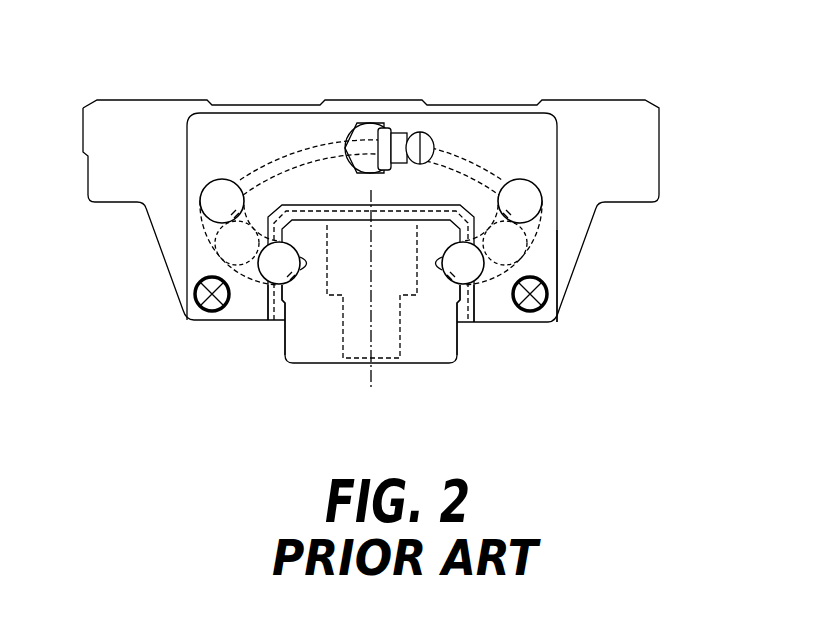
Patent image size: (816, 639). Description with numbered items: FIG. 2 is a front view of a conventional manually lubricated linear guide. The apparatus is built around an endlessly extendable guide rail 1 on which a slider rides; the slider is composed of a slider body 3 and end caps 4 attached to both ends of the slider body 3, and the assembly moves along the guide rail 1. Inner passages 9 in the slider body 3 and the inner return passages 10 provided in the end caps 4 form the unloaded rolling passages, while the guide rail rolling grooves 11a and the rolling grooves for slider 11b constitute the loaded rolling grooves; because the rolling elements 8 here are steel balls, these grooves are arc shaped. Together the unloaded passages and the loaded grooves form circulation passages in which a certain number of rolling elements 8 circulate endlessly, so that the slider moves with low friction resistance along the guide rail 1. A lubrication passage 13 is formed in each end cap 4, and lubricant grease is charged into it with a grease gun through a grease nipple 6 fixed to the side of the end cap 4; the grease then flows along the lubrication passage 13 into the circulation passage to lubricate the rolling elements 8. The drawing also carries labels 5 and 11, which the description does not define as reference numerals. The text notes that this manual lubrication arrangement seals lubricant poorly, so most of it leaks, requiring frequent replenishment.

The guide rail 1 is at (313, 345).
The slider body 3 is at (622, 175).
The end cap 4 is at (557, 243).
The end seal 5 is at (257, 138).
The grease nipple 6 is at (392, 133).
The rolling elements 8 is at (220, 195).
The inner passages 9 is at (207, 180).
The inner return passages 10 is at (217, 257).
The rolling groove 11 is at (266, 318).
The guide rail rolling grooves 11a is at (297, 283).
The rolling grooves for slider 11b is at (262, 282).
The lubrication passage 13 is at (320, 153).